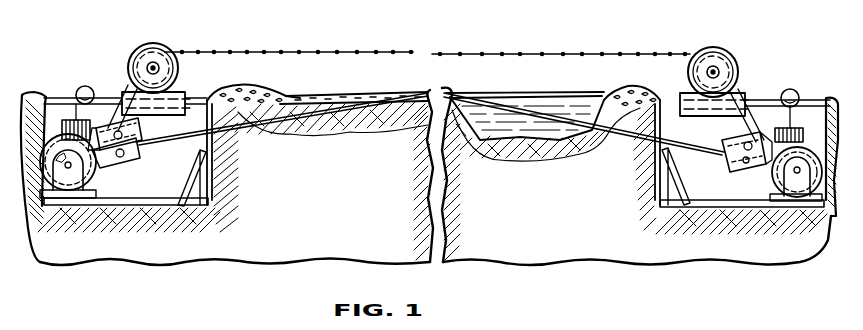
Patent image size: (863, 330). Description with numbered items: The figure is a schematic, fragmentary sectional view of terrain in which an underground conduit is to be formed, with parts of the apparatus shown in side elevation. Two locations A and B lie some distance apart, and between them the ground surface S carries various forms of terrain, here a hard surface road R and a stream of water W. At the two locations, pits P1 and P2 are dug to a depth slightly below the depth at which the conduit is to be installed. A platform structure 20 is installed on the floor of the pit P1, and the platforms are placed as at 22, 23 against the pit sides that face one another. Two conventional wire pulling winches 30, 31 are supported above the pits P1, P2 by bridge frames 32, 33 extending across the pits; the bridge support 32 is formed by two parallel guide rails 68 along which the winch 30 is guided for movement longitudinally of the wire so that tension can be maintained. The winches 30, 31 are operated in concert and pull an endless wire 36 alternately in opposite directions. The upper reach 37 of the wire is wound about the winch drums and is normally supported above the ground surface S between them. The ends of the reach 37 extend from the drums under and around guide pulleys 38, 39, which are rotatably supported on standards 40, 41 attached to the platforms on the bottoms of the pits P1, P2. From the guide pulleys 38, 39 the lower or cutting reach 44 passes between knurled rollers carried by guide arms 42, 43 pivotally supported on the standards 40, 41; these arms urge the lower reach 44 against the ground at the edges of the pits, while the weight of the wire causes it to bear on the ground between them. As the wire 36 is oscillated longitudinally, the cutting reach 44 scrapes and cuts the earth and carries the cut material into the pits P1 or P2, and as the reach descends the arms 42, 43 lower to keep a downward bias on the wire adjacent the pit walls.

The platform structure 20 is at (133, 203).
The platform placement against pit side 22 is at (206, 176).
The platform placement against pit side 23 is at (660, 182).
The wire pulling winch 30 is at (120, 67).
The wire pulling winch 31 is at (735, 52).
The bridge frame 32 is at (58, 99).
The bridge frame 33 is at (636, 89).
The endless wire 36 is at (294, 47).
The upper reach 37 is at (510, 53).
The guide pulley 38 is at (104, 170).
The guide pulley 39 is at (813, 148).
The standard 40 is at (83, 183).
The standard 41 is at (778, 188).
The guide arm 42 is at (133, 134).
The guide arm 43 is at (722, 155).
The lower or cutting reach 44 is at (253, 118).
The guide rails 68 is at (198, 103).
The location A is at (52, 78).
The location B is at (808, 72).
The ground surface S is at (300, 92).
The hard surface road R is at (378, 96).
The stream of water W is at (513, 108).
The pit P1 is at (152, 171).
The pit P2 is at (726, 184).